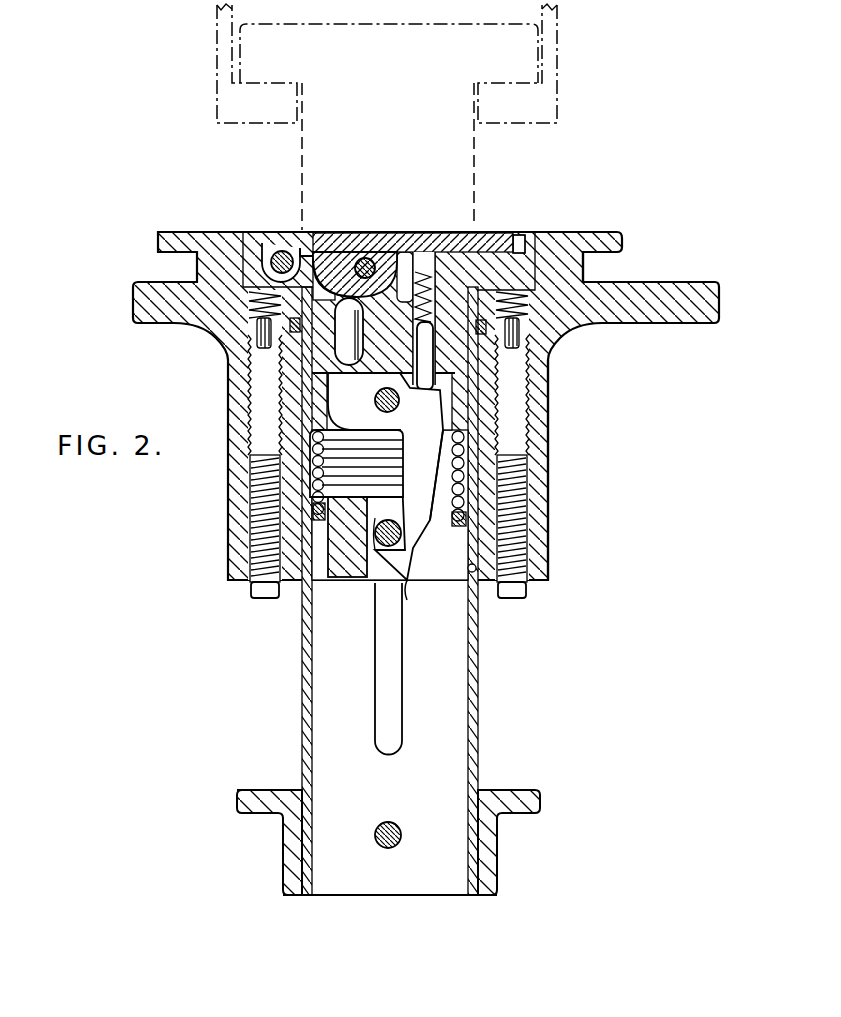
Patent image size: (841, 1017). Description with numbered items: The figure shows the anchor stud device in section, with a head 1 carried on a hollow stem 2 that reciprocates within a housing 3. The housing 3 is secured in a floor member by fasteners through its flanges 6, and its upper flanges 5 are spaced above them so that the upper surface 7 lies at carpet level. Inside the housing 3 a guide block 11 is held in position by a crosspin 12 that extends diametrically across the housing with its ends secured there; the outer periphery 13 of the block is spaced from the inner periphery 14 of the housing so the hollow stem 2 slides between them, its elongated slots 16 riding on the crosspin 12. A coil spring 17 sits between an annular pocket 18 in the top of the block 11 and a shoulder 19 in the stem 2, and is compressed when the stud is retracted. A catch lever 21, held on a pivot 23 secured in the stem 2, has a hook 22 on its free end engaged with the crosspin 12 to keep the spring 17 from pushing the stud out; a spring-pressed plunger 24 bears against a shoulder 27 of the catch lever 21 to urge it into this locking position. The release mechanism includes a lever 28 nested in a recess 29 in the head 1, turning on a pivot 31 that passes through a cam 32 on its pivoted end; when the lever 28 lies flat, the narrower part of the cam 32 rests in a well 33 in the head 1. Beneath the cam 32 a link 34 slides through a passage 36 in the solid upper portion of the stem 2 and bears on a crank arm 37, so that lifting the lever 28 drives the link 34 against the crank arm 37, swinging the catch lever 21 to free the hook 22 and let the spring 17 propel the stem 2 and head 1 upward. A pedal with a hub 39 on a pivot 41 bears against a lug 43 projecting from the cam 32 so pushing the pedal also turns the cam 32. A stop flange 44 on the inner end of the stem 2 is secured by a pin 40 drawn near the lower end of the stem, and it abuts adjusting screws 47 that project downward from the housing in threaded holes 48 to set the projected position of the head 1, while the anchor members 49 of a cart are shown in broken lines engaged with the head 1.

The head 1 is at (547, 233).
The hollow stem 2 is at (467, 398).
The housing 3 is at (547, 367).
The upper flanges 5 is at (617, 236).
The flanges 6 is at (673, 287).
The upper surface 7 is at (595, 230).
The guide block 11 is at (332, 570).
The crosspin 12 is at (387, 527).
The outer periphery 13 is at (468, 585).
The inner periphery 14 is at (473, 565).
The elongated slots 16 is at (402, 668).
The coil spring 17 is at (452, 450).
The annular pocket 18 is at (452, 520).
The shoulder 19 is at (440, 437).
The catch lever 21 is at (425, 472).
The hook 22 is at (418, 594).
The pivot 23 is at (380, 397).
The spring-pressed plunger 24 is at (415, 325).
The shoulder 27 is at (453, 376).
The lever 28 is at (497, 231).
The recess 29 is at (515, 233).
The pivot 31 is at (372, 233).
The cam 32 is at (343, 231).
The well 33 is at (317, 303).
The link 34 is at (290, 328).
The passage 36 is at (343, 340).
The crank arm 37 is at (340, 375).
The hub 39 is at (273, 231).
The cross pin 40 is at (380, 826).
The pivot 41 is at (290, 231).
The lug 43 is at (308, 231).
The stop flange 44 is at (513, 792).
The adjusting screws 47 is at (248, 582).
The threaded holes 48 is at (250, 517).
The anchor members 49 is at (222, 104).